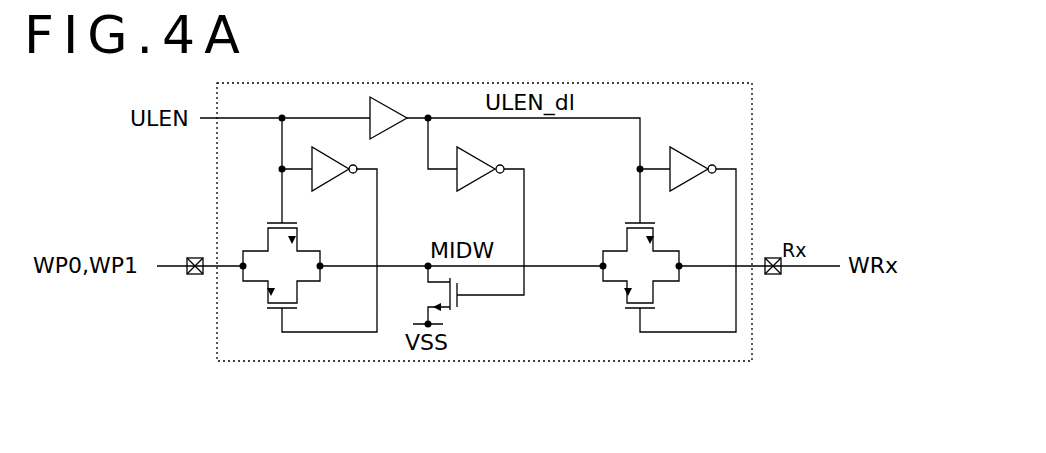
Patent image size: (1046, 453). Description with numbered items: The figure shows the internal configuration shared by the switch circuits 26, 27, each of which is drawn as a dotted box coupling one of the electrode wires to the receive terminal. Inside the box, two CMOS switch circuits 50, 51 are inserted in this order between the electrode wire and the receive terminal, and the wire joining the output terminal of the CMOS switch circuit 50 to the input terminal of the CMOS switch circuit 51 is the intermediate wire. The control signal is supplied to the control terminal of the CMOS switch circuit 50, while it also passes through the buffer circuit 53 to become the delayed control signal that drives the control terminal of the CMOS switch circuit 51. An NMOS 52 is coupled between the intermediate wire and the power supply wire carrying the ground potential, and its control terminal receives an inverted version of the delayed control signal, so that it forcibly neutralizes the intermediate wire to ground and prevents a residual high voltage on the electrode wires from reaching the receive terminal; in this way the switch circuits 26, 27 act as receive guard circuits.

The switch circuit 26 is at (484, 250).
The switch circuit 27 is at (693, 362).
The CMOS switch circuit 50 is at (262, 218).
The CMOS switch circuit 51 is at (620, 218).
The N-channel metal-oxide semiconductor (NMOS) 52 is at (465, 300).
The buffer circuit 53 is at (397, 130).